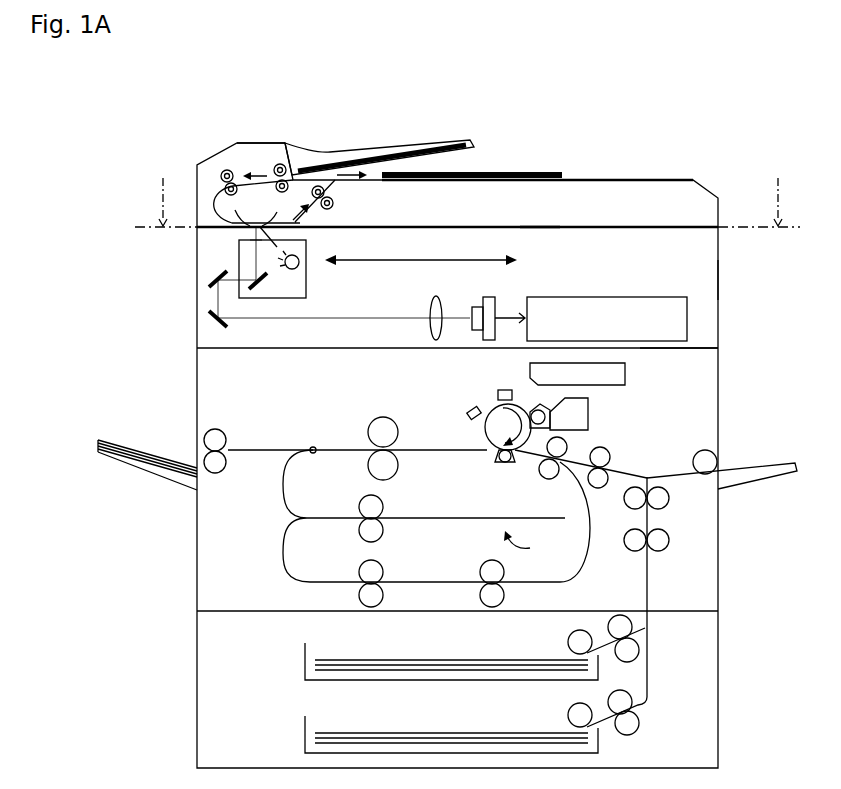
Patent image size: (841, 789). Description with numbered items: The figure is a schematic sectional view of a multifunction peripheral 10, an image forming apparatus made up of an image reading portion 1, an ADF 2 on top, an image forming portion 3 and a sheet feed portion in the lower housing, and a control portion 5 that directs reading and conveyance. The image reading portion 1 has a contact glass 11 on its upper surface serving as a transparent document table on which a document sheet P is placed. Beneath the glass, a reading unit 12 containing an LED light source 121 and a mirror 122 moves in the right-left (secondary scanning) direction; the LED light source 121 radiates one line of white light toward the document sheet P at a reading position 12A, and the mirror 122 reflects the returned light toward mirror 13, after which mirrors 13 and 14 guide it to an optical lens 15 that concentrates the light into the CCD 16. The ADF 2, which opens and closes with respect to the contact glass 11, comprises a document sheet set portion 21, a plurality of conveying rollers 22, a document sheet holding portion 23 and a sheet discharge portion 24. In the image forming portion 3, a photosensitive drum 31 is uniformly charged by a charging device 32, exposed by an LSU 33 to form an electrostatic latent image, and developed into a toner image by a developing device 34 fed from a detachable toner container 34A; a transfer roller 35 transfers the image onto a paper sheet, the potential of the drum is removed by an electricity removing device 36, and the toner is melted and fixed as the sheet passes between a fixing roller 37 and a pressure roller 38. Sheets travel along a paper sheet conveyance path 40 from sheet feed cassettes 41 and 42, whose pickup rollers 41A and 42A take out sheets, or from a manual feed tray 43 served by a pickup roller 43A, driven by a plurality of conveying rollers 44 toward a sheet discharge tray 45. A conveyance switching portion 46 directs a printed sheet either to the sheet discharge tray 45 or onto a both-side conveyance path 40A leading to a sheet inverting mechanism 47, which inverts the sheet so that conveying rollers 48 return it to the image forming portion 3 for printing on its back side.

The multifunction peripheral 10 is at (114, 100).
The image reading portion 1 is at (733, 280).
The ADF 2 is at (684, 163).
The image forming portion 3 is at (663, 390).
The control portion 5 is at (690, 318).
The contact glass 11 is at (539, 228).
The reading unit 12 is at (306, 241).
The reading position 12A is at (250, 229).
The LED light source 121 is at (299, 266).
The mirror 122 is at (258, 287).
The mirror 13 is at (205, 280).
The mirror 14 is at (205, 320).
The optical lens 15 is at (430, 302).
The CCD 16 is at (488, 297).
The document sheet set portion 21 is at (418, 140).
The conveying rollers 22 is at (222, 171).
The document sheet holding portion 23 is at (254, 224).
The sheet discharge portion 24 is at (463, 181).
The document sheet P is at (385, 155).
The photosensitive drum 31 is at (485, 440).
The charging device 32 is at (497, 394).
The LSU 33 is at (600, 385).
The developing device 34 is at (538, 405).
The toner container 34A is at (590, 420).
The transfer roller 35 is at (505, 463).
The electricity removing device 36 is at (466, 411).
The fixing roller 37 is at (378, 418).
The pressure roller 38 is at (368, 468).
The paper sheet conveyance path 40 is at (620, 482).
The both-side conveyance path 40A is at (283, 500).
The sheet feed cassette 41 is at (305, 665).
The pickup roller 41A is at (568, 640).
The sheet feed cassette 42 is at (305, 747).
The pickup roller 42A is at (568, 715).
The manual feed tray 43 is at (725, 489).
The pickup roller 43A is at (712, 452).
The conveying rollers 44 is at (551, 479).
The sheet discharge tray 45 is at (130, 468).
The conveyance switching portion 46 is at (312, 447).
The sheet inverting mechanism 47 is at (529, 547).
The conveying rollers 48 is at (383, 530).